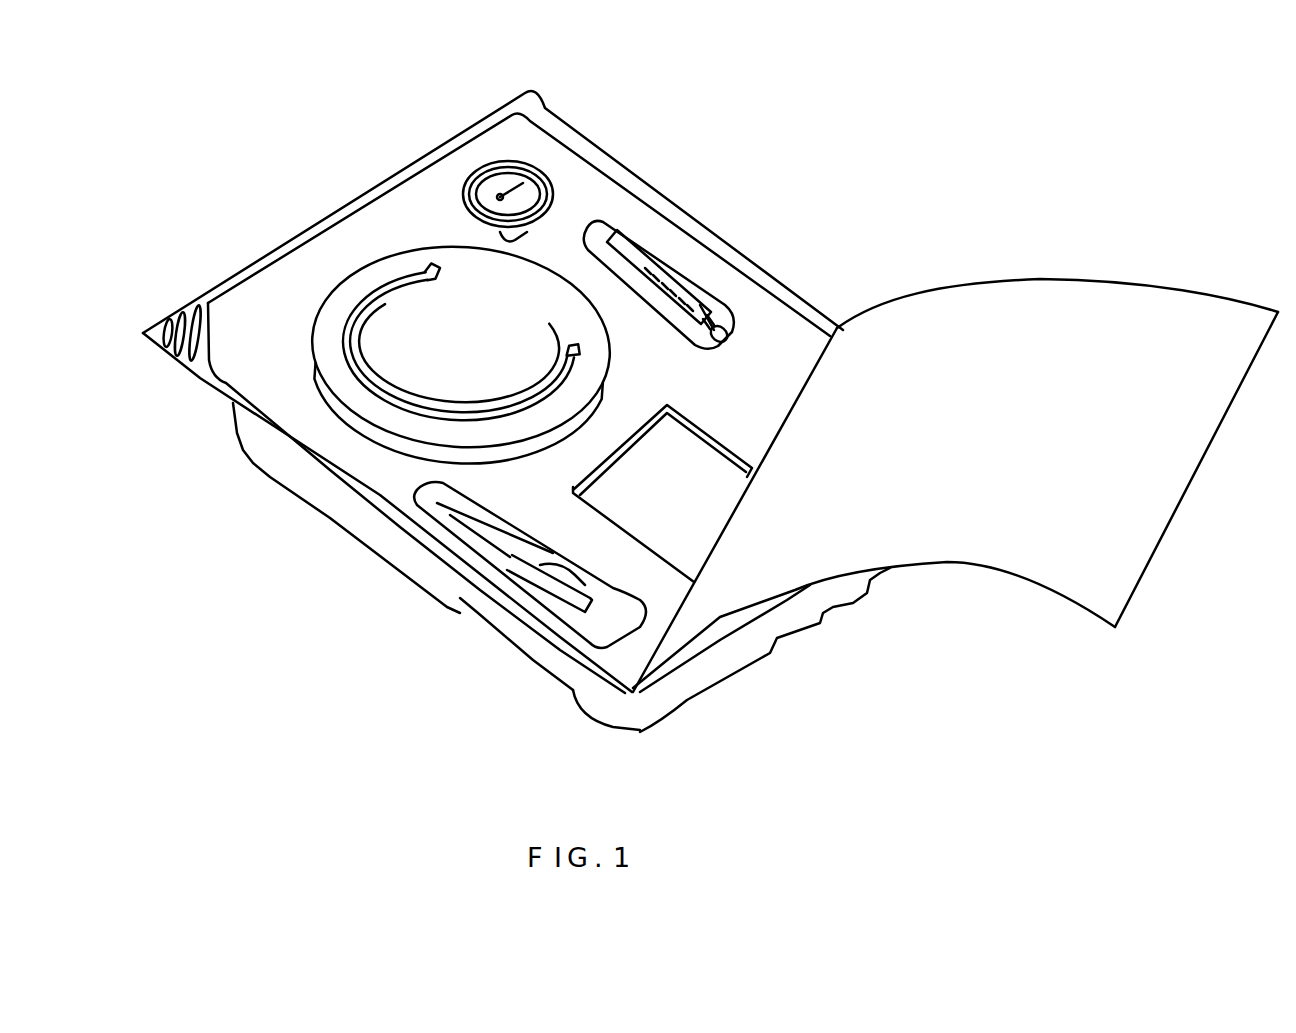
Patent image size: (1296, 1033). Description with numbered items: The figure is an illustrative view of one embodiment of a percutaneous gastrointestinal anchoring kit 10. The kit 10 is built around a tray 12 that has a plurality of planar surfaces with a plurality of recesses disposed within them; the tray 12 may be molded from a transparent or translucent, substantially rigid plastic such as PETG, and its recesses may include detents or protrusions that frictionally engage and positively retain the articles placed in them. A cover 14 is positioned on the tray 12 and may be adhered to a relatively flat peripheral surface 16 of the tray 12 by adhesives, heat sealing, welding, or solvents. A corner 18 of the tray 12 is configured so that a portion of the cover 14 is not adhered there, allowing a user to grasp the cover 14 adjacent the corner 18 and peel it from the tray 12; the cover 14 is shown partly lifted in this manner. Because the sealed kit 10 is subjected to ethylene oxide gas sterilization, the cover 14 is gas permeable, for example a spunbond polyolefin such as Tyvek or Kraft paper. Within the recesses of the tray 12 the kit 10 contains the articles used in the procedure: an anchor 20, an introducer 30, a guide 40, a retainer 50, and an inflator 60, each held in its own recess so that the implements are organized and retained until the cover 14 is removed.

The percutaneous gastrointestinal anchoring kit 10 is at (217, 657).
The tray 12 is at (270, 443).
The cover 14 is at (1130, 297).
The peripheral surface 16 is at (720, 240).
The corner 18 is at (155, 333).
The anchor 20 is at (386, 284).
The introducer 30 is at (510, 533).
The guide 40 is at (563, 314).
The retainer 50 is at (500, 197).
The inflator 60 is at (650, 255).